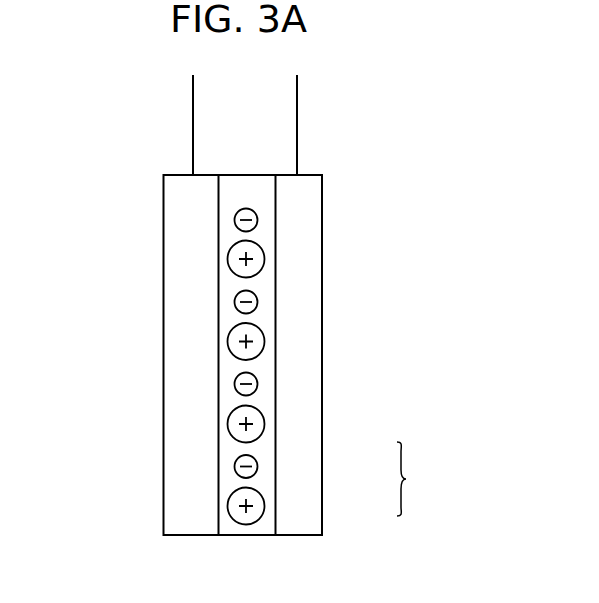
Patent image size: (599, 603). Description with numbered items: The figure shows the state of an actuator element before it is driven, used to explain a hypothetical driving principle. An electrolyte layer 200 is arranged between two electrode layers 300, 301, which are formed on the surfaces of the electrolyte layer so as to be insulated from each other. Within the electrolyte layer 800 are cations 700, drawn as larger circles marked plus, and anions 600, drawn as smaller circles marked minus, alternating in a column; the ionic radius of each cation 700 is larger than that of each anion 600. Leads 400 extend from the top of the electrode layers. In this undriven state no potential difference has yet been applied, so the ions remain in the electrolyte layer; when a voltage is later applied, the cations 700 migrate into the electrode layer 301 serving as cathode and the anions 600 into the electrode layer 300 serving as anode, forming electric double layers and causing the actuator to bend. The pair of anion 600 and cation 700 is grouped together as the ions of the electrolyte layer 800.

The lead wire 400 is at (297, 120).
The electrode layer 300 is at (301, 299).
The electrode layer 301 is at (180, 265).
The electrolyte layer 200 is at (227, 376).
The anions 600 is at (258, 463).
The cations 700 is at (264, 501).
The electrolyte layer 800 is at (423, 479).